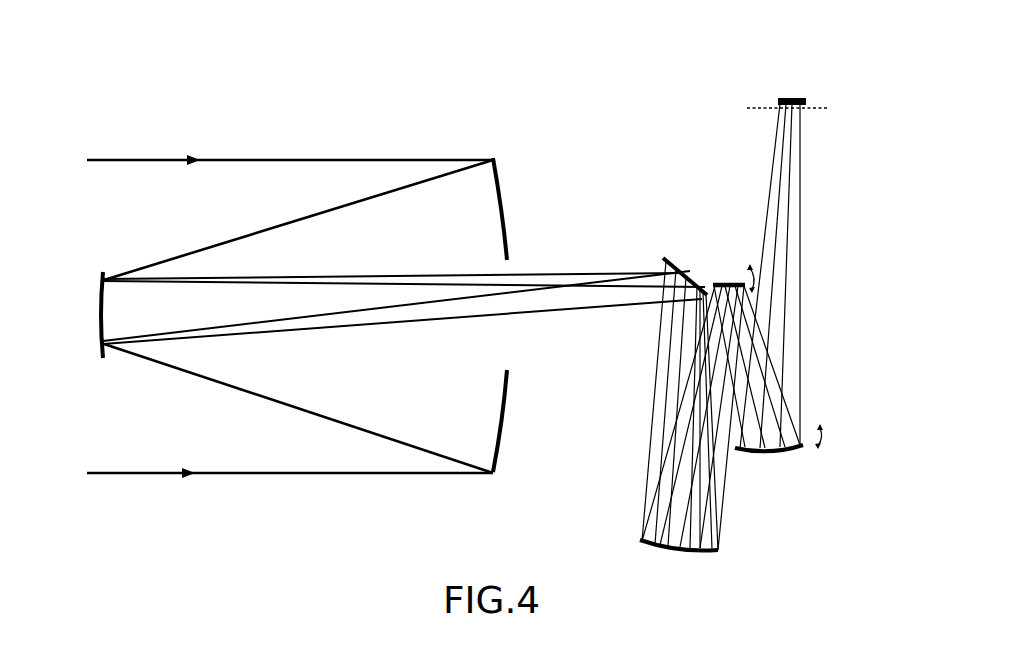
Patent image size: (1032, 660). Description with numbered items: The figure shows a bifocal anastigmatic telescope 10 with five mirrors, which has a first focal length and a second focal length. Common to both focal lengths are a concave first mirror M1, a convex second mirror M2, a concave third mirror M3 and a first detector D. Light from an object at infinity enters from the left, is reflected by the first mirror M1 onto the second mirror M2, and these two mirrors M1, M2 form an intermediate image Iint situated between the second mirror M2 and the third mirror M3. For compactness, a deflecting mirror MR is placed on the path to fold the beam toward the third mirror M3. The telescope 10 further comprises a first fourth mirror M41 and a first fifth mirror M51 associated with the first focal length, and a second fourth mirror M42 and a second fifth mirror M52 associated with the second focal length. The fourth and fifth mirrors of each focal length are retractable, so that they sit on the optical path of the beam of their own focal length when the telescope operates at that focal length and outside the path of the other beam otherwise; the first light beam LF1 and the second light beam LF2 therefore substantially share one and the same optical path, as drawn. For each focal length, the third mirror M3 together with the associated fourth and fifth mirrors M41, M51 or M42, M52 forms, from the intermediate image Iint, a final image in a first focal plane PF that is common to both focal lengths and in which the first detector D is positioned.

The bifocal anastigmatic telescope 10 is at (426, 130).
The concave first mirror M1 is at (498, 466).
The convex second mirror M2 is at (101, 318).
The concave third mirror M3 is at (650, 545).
The first fourth mirror M41 is at (727, 300).
The second fourth mirror M42 is at (728, 283).
The first fifth mirror M51 is at (788, 322).
The second fifth mirror M52 is at (776, 456).
The deflecting mirror MR is at (664, 258).
The first light beam LF1 is at (565, 312).
The second light beam LF2 is at (572, 260).
The intermediate image Iint is at (698, 334).
The first focal plane PF is at (750, 106).
The first detector D is at (797, 98).